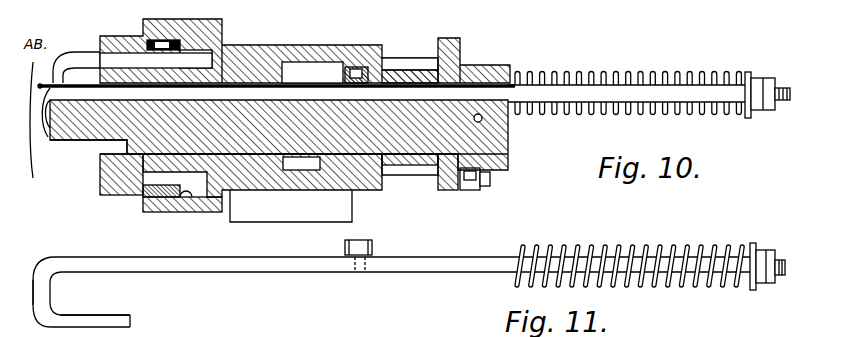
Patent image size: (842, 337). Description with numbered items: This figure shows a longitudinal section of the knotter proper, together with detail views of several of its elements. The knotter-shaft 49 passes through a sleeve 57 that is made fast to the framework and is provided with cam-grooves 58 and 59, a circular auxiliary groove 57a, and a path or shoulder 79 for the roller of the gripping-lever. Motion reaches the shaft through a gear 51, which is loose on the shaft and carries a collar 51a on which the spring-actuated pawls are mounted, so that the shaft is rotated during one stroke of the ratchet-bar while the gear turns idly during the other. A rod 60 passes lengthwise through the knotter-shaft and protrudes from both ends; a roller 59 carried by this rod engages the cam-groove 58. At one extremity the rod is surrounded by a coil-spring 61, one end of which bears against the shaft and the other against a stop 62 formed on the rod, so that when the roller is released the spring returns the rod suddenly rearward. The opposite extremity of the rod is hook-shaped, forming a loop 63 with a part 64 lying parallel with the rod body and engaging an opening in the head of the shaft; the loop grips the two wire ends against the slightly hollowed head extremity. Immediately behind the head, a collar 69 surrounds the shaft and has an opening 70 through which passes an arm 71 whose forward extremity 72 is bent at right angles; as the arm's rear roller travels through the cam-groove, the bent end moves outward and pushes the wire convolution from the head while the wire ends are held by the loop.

In FIG. 10, the shaft 49 is at (296, 161).
In FIG. 10, the gear 51 is at (410, 106).
In FIG. 10, the collar 51a is at (461, 46).
In FIG. 10, the sleeve 57 is at (305, 51).
In FIG. 10, the circular auxiliary groove 57a is at (155, 207).
In FIG. 10, the cam-groove 58 is at (318, 68).
In FIG. 10, the roller 59 is at (367, 46).
In FIG. 11, the roller 59 is at (372, 247).
In FIG. 10, the rod 60 is at (500, 58).
In FIG. 11, the rod 60 is at (308, 270).
In FIG. 10, the coil-spring 61 is at (577, 72).
In FIG. 11, the coil-spring 61 is at (577, 255).
In FIG. 10, the stop 62 is at (752, 72).
In FIG. 11, the stop 62 is at (757, 247).
In FIG. 10, the loop 63 is at (34, 146).
In FIG. 11, the loop 63 is at (45, 289).
In FIG. 10, the part 64 is at (88, 147).
In FIG. 11, the part 64 is at (105, 317).
In FIG. 10, the collar 69 is at (115, 198).
In FIG. 11, the opening 70 is at (187, 333).
In FIG. 10, the arm 71 is at (83, 58).
In FIG. 10, the forward extremity 72 is at (50, 72).
In FIG. 10, the path or shoulder 79 is at (162, 188).